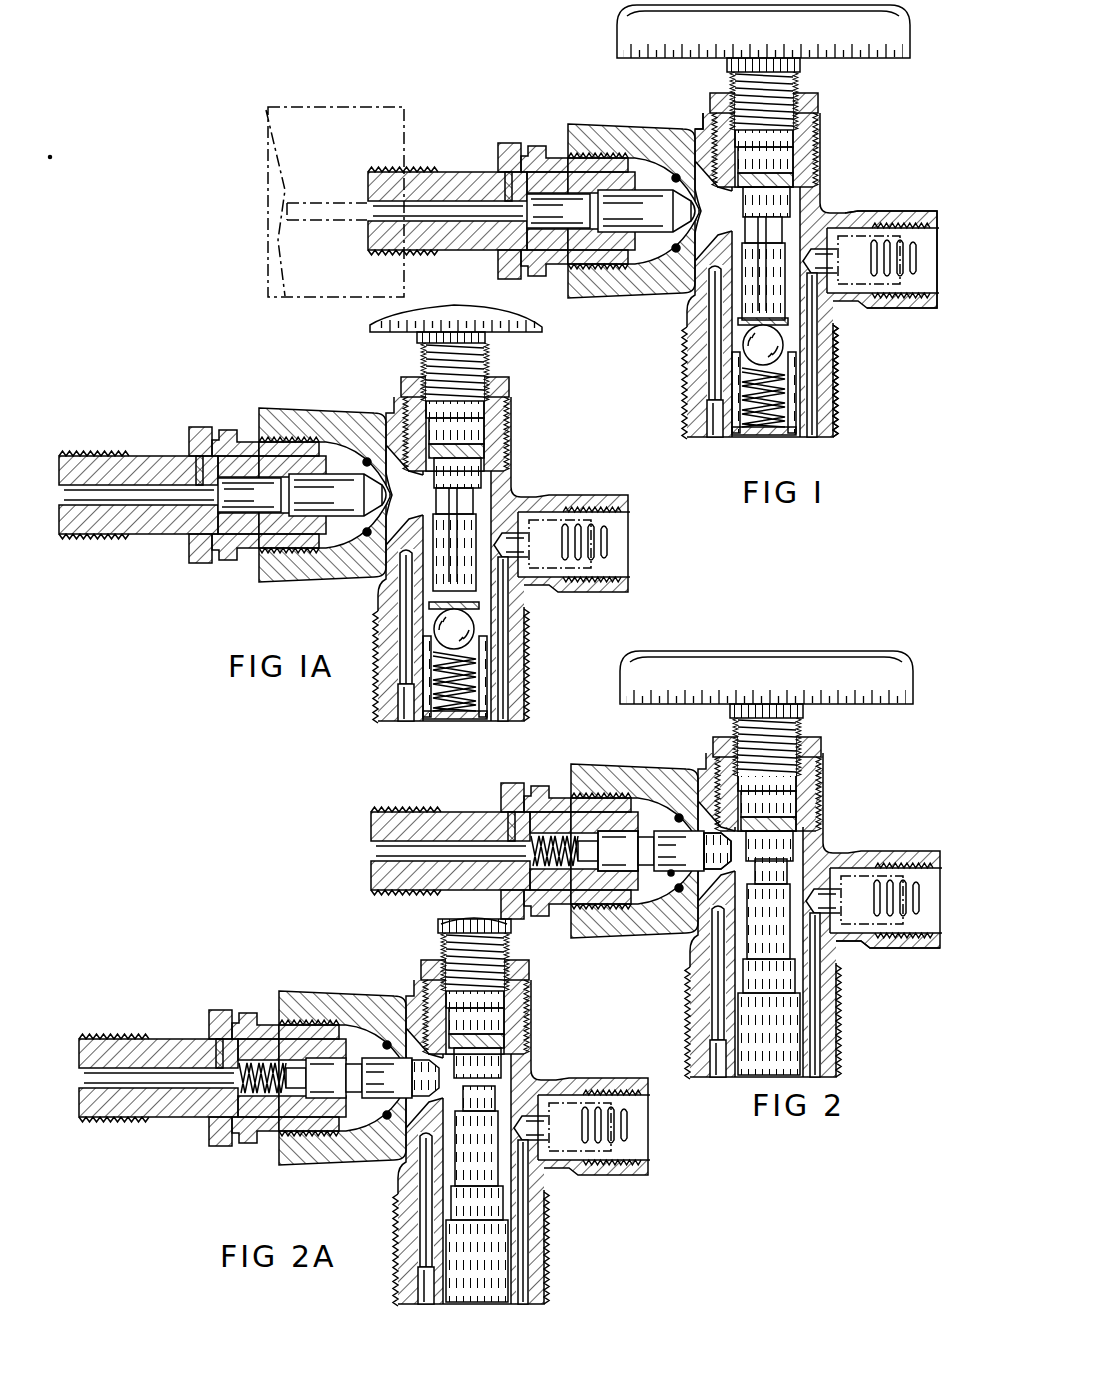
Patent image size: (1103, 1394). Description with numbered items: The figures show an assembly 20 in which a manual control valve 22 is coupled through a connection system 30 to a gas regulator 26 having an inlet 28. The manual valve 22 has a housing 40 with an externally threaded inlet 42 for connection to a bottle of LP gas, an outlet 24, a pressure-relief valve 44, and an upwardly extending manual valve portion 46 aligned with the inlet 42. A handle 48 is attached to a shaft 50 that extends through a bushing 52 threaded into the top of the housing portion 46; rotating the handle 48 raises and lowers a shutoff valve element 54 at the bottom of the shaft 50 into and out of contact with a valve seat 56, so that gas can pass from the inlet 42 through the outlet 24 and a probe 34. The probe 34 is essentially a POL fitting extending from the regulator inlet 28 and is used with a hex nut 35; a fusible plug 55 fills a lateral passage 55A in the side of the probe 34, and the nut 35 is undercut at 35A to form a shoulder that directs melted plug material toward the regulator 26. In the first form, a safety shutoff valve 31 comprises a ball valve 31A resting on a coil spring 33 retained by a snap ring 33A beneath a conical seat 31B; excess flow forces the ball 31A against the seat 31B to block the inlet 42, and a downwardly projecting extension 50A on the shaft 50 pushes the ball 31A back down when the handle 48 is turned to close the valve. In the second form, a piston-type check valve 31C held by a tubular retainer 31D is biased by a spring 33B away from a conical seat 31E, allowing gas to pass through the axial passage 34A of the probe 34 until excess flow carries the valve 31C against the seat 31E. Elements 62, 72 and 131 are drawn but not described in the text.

In FIG. 1, the assembly 20 is at (282, 90).
In FIG. 1, the manual control valve 22 is at (866, 137).
In FIG. 1A, the manual control valve 22 is at (520, 416).
In FIG. 2, the manual control valve 22 is at (852, 818).
In FIG. 2A, the manual control valve 22 is at (385, 1178).
In FIG. 1, the outlet 24 is at (566, 124).
In FIG. 2, the outlet 24 is at (630, 933).
In FIG. 2A, the outlet 24 is at (272, 1165).
In FIG. 1, the gas regulator 26 is at (332, 130).
In FIG. 1, the regulator inlet 28 is at (300, 190).
In FIG. 1, the connection system 30 is at (447, 125).
In FIG. 1A, the connection system 30 is at (250, 426).
In FIG. 2, the connection system 30 is at (560, 787).
In FIG. 1, the safety shutoff valve 31 is at (733, 372).
In FIG. 1, the ball valve 31A is at (775, 346).
In FIG. 1A, the ball valve 31A is at (445, 622).
In FIG. 1, the conical seat 31B is at (785, 318).
In FIG. 1A, the conical seat 31B is at (478, 612).
In FIG. 2, the piston-type check valve 31C is at (668, 880).
In FIG. 2, the tubular retainer 31D is at (700, 835).
In FIG. 2, the conical seat 31E is at (612, 840).
In FIG. 1, the coil spring 33 is at (733, 434).
In FIG. 1A, the coil spring 33 is at (483, 675).
In FIG. 1, the snap ring 33A is at (780, 434).
In FIG. 2, the biasing spring 33B is at (560, 868).
In FIG. 1, the probe 34 is at (648, 170).
In FIG. 1A, the probe 34 is at (347, 450).
In FIG. 2, the probe 34 is at (680, 893).
In FIG. 1, the axial passage 34A is at (475, 180).
In FIG. 2, the axial passage 34A is at (372, 850).
In FIG. 1, the hex nut 35 is at (501, 140).
In FIG. 1A, the hex nut 35 is at (195, 425).
In FIG. 2A, the hex nut 35 is at (215, 1010).
In FIG. 1A, the undercut 35A is at (195, 537).
In FIG. 2A, the undercut 35A is at (215, 1120).
In FIG. 1, the housing 40 is at (697, 128).
In FIG. 2, the housing 40 is at (850, 955).
In FIG. 1, the externally threaded inlet 42 is at (836, 392).
In FIG. 1, the pressure-relief valve 44 is at (942, 242).
In FIG. 1, the manual valve portion 46 is at (814, 160).
In FIG. 1, the handle 48 is at (766, 39).
In FIG. 1A, the handle 48 is at (412, 318).
In FIG. 2, the handle 48 is at (784, 698).
In FIG. 2A, the handle 48 is at (445, 926).
In FIG. 1, the shaft 50 is at (795, 84).
In FIG. 1, the extension 50A is at (757, 293).
In FIG. 1, the bushing 52 is at (818, 108).
In FIG. 1, the shutoff valve element 54 is at (800, 198).
In FIG. 1A, the shutoff valve element 54 is at (490, 468).
In FIG. 1, the fusible plug 55 is at (508, 174).
In FIG. 2, the fusible plug 55 is at (504, 825).
In FIG. 1A, the lateral passage 55A is at (196, 468).
In FIG. 2A, the lateral passage 55A is at (212, 1050).
In FIG. 1, the valve seat 56 is at (768, 222).
In FIG. 1A, the valve seat 56 is at (485, 487).
In FIG. 1, the tube insert 62 is at (690, 232).
In FIG. 2A, the tube insert 62 is at (388, 1046).
In FIG. 1, the threads 72 is at (598, 132).
In FIG. 1A, the threads 72 is at (290, 412).
In FIG. 2, the check valve 131 is at (648, 832).
In FIG. 2A, the check valve 131 is at (332, 1060).